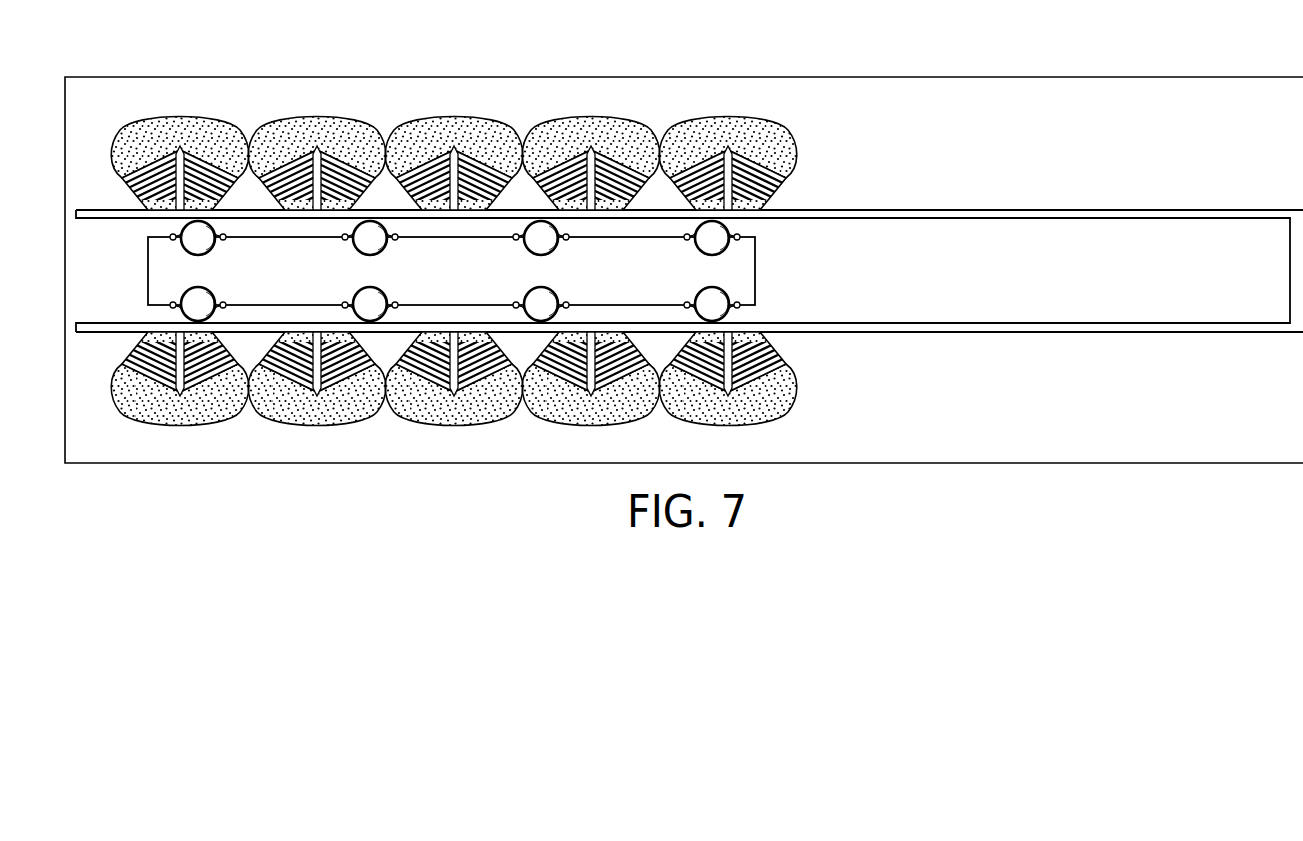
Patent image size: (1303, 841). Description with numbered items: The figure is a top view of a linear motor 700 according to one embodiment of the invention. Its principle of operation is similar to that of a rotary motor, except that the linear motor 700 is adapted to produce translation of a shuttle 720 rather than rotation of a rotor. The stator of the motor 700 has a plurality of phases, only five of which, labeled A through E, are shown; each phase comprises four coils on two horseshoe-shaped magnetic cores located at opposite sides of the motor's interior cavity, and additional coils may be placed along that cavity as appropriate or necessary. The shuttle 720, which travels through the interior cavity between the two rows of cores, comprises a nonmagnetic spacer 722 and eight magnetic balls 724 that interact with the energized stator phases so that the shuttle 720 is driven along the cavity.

The linear motor 700 is at (819, 39).
The shuttle 720 is at (763, 279).
The nonmagnetic spacer 722 is at (505, 278).
The magnetic balls 724 is at (212, 254).